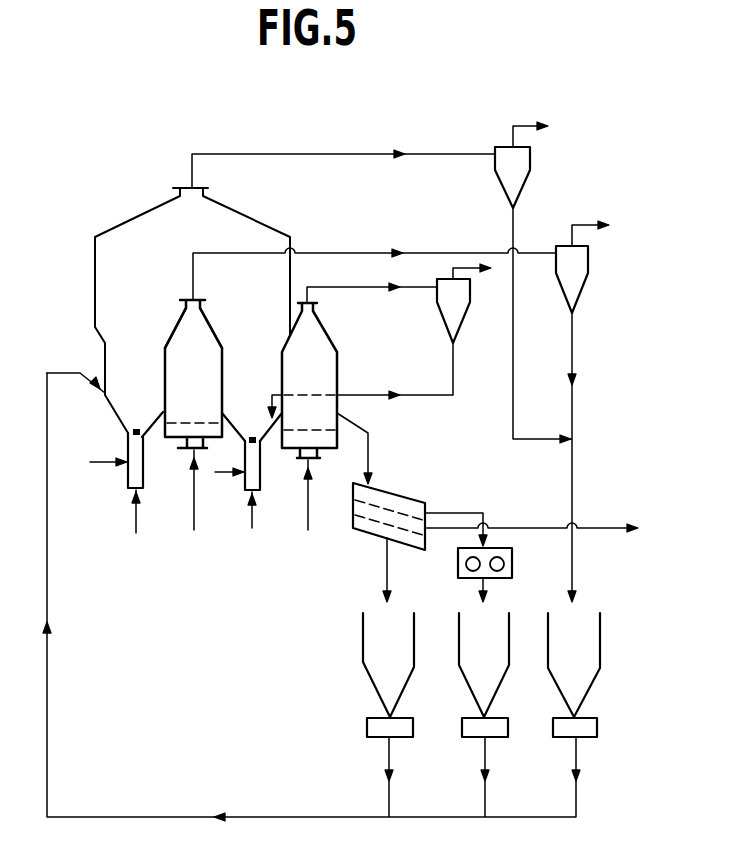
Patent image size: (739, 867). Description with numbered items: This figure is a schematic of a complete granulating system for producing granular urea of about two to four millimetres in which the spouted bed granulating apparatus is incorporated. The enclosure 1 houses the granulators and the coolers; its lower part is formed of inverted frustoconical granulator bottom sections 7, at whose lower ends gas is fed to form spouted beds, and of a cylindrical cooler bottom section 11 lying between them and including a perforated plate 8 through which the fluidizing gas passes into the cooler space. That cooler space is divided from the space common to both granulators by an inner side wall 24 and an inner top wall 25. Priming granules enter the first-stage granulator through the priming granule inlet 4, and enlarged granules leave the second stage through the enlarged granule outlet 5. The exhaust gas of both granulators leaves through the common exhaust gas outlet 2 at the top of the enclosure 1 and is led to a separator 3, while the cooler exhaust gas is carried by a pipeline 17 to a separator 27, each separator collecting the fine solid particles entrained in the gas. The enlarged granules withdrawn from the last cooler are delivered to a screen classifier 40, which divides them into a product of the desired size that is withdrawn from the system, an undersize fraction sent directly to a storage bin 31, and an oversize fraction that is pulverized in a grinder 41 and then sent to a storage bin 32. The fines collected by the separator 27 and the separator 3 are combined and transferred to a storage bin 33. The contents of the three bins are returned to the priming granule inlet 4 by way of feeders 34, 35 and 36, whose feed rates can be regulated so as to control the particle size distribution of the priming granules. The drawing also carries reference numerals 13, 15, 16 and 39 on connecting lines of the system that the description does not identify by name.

The enclosure 1 is at (123, 222).
The exhaust gas outlet 2 is at (183, 188).
The separator 3 is at (530, 165).
The priming granule inlet 4 is at (103, 395).
The enlarged granule outlet 5 is at (340, 412).
The granulator bottom section 7 is at (118, 425).
The perforated plate 8 is at (195, 423).
The cooler bottom section 11 is at (181, 440).
The gas inlet line 13 is at (103, 464).
The fluidizing gas inlet 15 is at (193, 505).
The transport gas inlet 16 is at (136, 522).
The pipeline 17 is at (356, 287).
The inner side wall 24 is at (165, 362).
The inner top wall 25 is at (215, 335).
The separator 27 is at (445, 320).
The storage bin 31 is at (362, 665).
The storage bin 32 is at (458, 655).
The storage bin 33 is at (602, 645).
The feeder 34 is at (367, 728).
The feeder 35 is at (470, 738).
The feeder 36 is at (598, 728).
The recycle line 39 is at (148, 817).
The screen classifier 40 is at (395, 488).
The grinder 41 is at (512, 568).